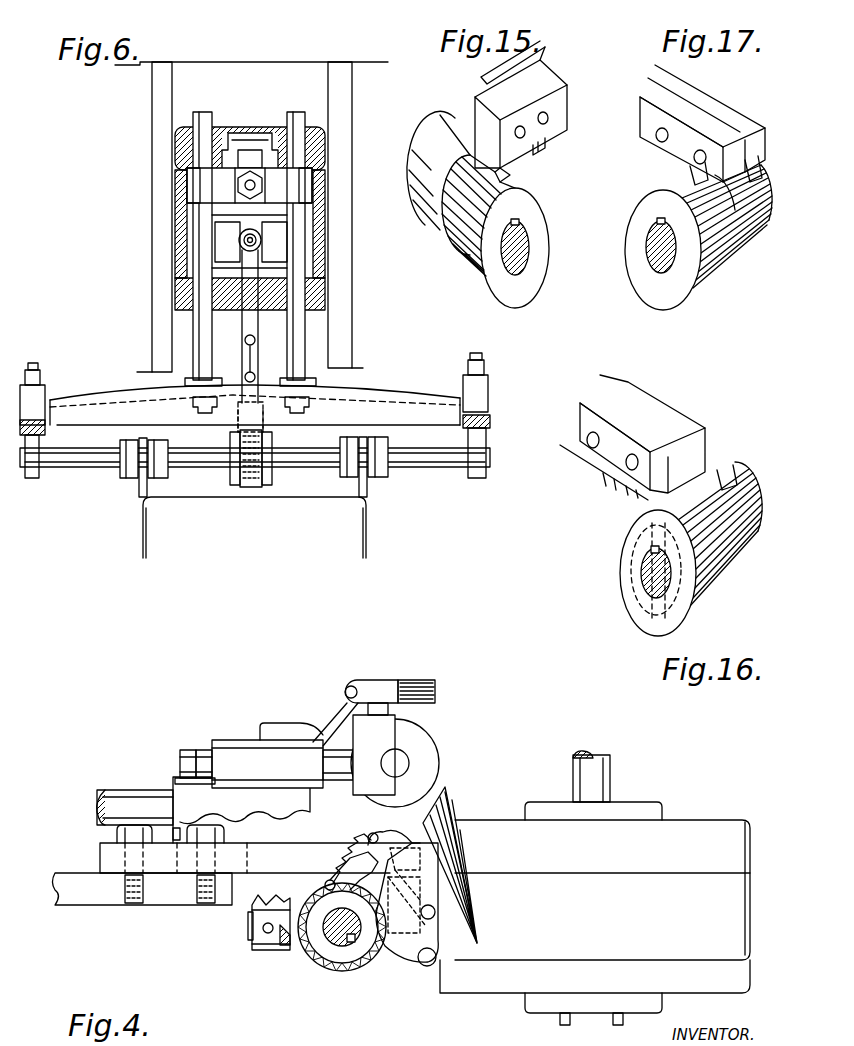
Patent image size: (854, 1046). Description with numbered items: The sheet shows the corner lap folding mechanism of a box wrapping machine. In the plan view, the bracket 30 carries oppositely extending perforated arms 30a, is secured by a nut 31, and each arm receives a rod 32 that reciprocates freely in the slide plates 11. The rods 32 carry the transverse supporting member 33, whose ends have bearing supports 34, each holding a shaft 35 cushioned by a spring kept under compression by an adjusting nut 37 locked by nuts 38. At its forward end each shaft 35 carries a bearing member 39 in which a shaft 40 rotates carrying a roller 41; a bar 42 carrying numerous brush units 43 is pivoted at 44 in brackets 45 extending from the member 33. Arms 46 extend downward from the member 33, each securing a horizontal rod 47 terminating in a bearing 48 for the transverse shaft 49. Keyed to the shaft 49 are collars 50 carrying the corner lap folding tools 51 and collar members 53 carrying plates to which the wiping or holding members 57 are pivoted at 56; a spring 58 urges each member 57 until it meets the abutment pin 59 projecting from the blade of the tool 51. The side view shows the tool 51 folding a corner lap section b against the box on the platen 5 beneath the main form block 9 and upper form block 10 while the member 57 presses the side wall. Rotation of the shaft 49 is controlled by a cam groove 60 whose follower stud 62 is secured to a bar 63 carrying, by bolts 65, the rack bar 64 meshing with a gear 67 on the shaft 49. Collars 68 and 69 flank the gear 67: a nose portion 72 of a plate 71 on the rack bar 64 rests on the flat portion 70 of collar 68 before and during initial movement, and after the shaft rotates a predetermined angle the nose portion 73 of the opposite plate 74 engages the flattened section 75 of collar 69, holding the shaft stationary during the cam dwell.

In FIG. 4, the platen 5 is at (504, 983).
In FIG. 4, the main form block 9 is at (740, 856).
In FIG. 4, the upper form block 10 is at (735, 921).
In FIG. 6, the slide plates 11 is at (188, 142).
In FIG. 6, the bracket 30 is at (275, 188).
In FIG. 6, the perforated arms 30a is at (200, 193).
In FIG. 6, the nut 31 is at (218, 188).
In FIG. 6, the rod 32 is at (200, 250).
In FIG. 4, the rod 32 is at (118, 800).
In FIG. 6, the supporting member 33 is at (157, 407).
In FIG. 6, the bearing support 34 is at (35, 400).
In FIG. 4, the bearing support 34 is at (226, 755).
In FIG. 4, the shaft 35 is at (341, 762).
In FIG. 6, the nut 37 is at (24, 383).
In FIG. 4, the nut 37 is at (204, 750).
In FIG. 6, the lock nuts 38 is at (38, 368).
In FIG. 4, the lock nuts 38 is at (186, 751).
In FIG. 4, the bearing member 39 is at (390, 735).
In FIG. 4, the roller shaft 40 is at (397, 763).
In FIG. 4, the roller 41 is at (423, 741).
In FIG. 4, the bar 42 is at (384, 681).
In FIG. 4, the brush units 43 is at (428, 681).
In FIG. 4, the pivot 44 is at (354, 687).
In FIG. 4, the brackets 45 is at (290, 728).
In FIG. 4, the arms 46 is at (305, 815).
In FIG. 4, the horizontal rod 47 is at (250, 937).
In FIG. 6, the bearing 48 is at (478, 465).
In FIG. 4, the bearing 48 is at (267, 940).
In FIG. 6, the shaft 49 is at (436, 460).
In FIG. 15, the shaft 49 is at (522, 258).
In FIG. 17, the shaft 49 is at (662, 255).
In FIG. 16, the shaft 49 is at (668, 581).
In FIG. 4, the shaft 49 is at (340, 945).
In FIG. 6, the collars 50 is at (128, 463).
In FIG. 6, the corner lap folding tool 51 is at (142, 488).
In FIG. 4, the corner lap folding tool 51 is at (460, 940).
In FIG. 6, the collar members 53 is at (163, 465).
In FIG. 4, the pivot 56 is at (373, 836).
In FIG. 6, the wiping or holding member 57 is at (143, 500).
In FIG. 4, the wiping or holding member 57 is at (418, 961).
In FIG. 4, the spring 58 is at (351, 858).
In FIG. 4, the abutment pin 59 is at (436, 912).
In FIG. 6, the cam groove 60 is at (240, 238).
In FIG. 6, the stud 62 is at (245, 240).
In FIG. 6, the bar 63 is at (248, 305).
In FIG. 4, the bar 63 is at (90, 897).
In FIG. 6, the rack bar 64 is at (262, 397).
In FIG. 15, the rack bar 64 is at (543, 85).
In FIG. 17, the rack bar 64 is at (688, 103).
In FIG. 16, the rack bar 64 is at (630, 407).
In FIG. 4, the rack bar 64 is at (263, 866).
In FIG. 6, the bolts 65 is at (250, 375).
In FIG. 4, the bolts 65 is at (133, 903).
In FIG. 6, the gear 67 is at (250, 487).
In FIG. 15, the gear 67 is at (450, 228).
In FIG. 17, the gear 67 is at (737, 240).
In FIG. 16, the gear 67 is at (733, 560).
In FIG. 4, the gear 67 is at (322, 963).
In FIG. 6, the collar member 68 is at (267, 480).
In FIG. 15, the collar member 68 is at (549, 243).
In FIG. 17, the collar member 68 is at (762, 207).
In FIG. 16, the collar member 68 is at (754, 506).
In FIG. 6, the collar member 69 is at (233, 482).
In FIG. 15, the collar member 69 is at (420, 185).
In FIG. 17, the collar member 69 is at (681, 282).
In FIG. 16, the collar member 69 is at (701, 595).
In FIG. 15, the flat portion 70 is at (507, 180).
In FIG. 17, the flat portion 70 is at (756, 168).
In FIG. 16, the flat portion 70 is at (738, 483).
In FIG. 6, the plate 71 is at (262, 413).
In FIG. 15, the plate 71 is at (567, 106).
In FIG. 17, the plate 71 is at (747, 121).
In FIG. 16, the plate 71 is at (680, 418).
In FIG. 15, the nose portion 72 is at (524, 154).
In FIG. 16, the nose portion 73 is at (606, 482).
In FIG. 6, the plate 74 is at (240, 414).
In FIG. 15, the plate 74 is at (510, 71).
In FIG. 17, the plate 74 is at (690, 130).
In FIG. 16, the plate 74 is at (600, 450).
In FIG. 17, the flattened section 75 is at (690, 177).
In FIG. 16, the flattened section 75 is at (638, 564).
In FIG. 4, the corner lap section b is at (446, 822).